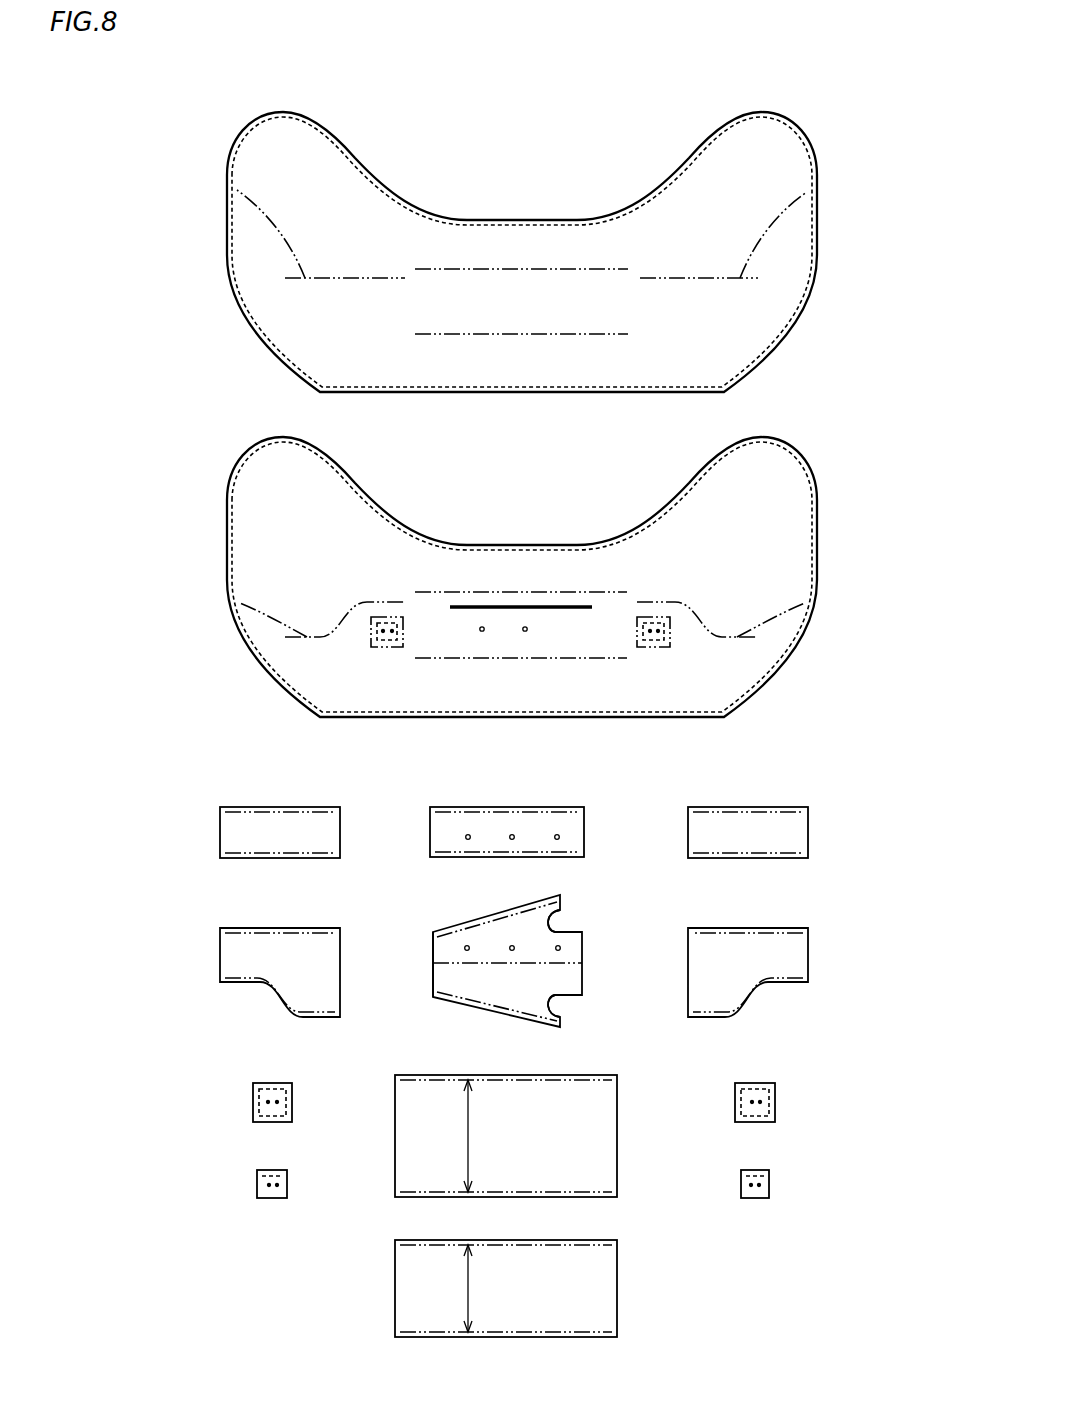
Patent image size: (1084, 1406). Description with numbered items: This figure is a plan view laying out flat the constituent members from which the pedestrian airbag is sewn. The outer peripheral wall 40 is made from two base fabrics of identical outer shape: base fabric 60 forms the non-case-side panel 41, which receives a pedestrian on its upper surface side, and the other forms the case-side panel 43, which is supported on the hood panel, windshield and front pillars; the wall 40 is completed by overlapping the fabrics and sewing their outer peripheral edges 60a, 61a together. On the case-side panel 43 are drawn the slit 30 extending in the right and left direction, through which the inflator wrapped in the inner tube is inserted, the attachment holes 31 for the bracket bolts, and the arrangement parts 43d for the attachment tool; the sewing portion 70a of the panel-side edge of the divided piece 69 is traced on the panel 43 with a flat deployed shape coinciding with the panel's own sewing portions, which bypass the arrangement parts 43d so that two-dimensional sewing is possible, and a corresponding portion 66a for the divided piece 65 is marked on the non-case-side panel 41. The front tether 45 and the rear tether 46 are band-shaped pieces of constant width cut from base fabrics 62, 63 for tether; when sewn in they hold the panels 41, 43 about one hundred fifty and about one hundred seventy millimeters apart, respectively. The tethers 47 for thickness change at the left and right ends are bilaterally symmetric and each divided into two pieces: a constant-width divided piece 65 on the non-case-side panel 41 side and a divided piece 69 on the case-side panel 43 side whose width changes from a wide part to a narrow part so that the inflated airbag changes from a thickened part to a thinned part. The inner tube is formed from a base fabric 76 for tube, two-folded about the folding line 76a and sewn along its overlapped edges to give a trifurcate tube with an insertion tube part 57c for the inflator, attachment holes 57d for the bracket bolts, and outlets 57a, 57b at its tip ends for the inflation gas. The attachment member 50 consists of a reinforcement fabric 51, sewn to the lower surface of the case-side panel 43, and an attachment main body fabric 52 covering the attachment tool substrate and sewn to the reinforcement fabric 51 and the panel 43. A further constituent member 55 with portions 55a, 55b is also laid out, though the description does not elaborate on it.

The outer peripheral wall 40 is at (138, 306).
The base fabric for airbag 60 is at (526, 413).
The non-case-side panel 41 is at (221, 234).
The case-side panel 43 is at (221, 503).
The outer peripheral edge 60a is at (807, 135).
The outer peripheral edge 61a is at (785, 440).
The upper side plate portion 66a is at (237, 192).
The divided piece 65 is at (212, 830).
The sewing portion 70a is at (228, 603).
The divided piece 69 is at (212, 963).
The arrangement part 43d is at (390, 617).
The slit 30 is at (563, 603).
The attachment holes 31 is at (525, 633).
The rear tether 46 is at (577, 268).
The front tether 45 is at (530, 335).
The tether for thickness change 47 is at (887, 968).
The center upper plate 55 is at (598, 810).
The upper edge of center plate 55a is at (500, 807).
The hole of center plate 55b is at (465, 837).
The base fabric for tube 76 is at (595, 930).
The folding line 76a is at (558, 963).
The outlet 57a is at (437, 950).
The outlet 57b is at (553, 913).
The insertion tube part 57c is at (573, 980).
The attachment holes 57d is at (467, 945).
The attachment member 50 is at (138, 1085).
The reinforcement fabric 51 is at (243, 1102).
The attachment main body fabric 52 is at (243, 1185).
The base fabric for tether 62 is at (407, 1295).
The base fabric for tether 63 is at (605, 1137).